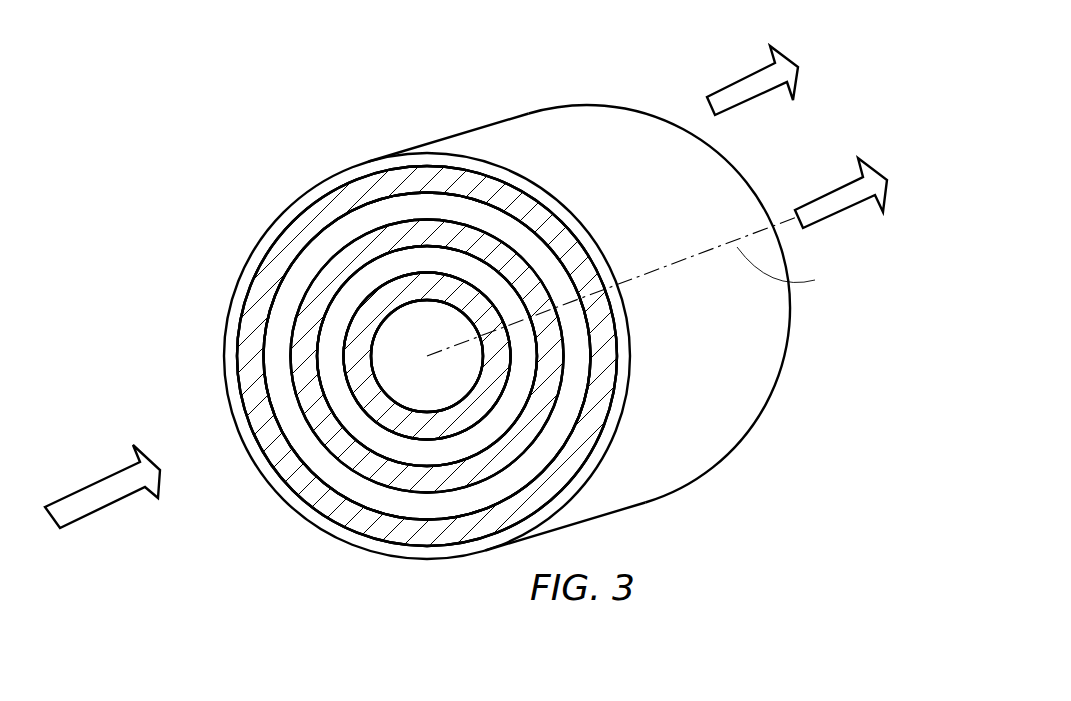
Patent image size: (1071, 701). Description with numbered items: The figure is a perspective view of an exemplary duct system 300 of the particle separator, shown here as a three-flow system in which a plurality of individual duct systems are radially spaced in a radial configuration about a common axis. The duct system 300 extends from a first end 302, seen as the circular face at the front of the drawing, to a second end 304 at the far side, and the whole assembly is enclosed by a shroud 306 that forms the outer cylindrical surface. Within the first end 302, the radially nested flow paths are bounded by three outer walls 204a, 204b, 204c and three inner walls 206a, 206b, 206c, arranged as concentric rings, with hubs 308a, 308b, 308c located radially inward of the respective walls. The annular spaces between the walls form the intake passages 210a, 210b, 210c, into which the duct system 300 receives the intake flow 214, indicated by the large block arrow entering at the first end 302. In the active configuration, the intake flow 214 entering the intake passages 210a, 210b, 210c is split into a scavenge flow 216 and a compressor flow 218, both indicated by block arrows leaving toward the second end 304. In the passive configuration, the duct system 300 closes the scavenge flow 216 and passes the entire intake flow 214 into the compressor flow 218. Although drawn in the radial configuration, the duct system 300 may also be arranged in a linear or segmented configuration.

The duct system 300 is at (397, 83).
The first end 302 is at (298, 568).
The second end 304 is at (770, 402).
The shroud 306 is at (522, 118).
The outer wall 204a is at (302, 210).
The outer wall 204b is at (320, 266).
The outer wall 204c is at (330, 318).
The inner wall 206a is at (328, 240).
The inner wall 206b is at (363, 303).
The inner wall 206c is at (387, 308).
The hub 308a is at (290, 316).
The hub 308b is at (330, 342).
The hub 308c is at (410, 370).
The intake passage 210a is at (270, 432).
The intake passage 210b is at (327, 432).
The intake passage 210c is at (395, 425).
The intake flow 214 is at (105, 478).
The scavenge flow 216 is at (742, 77).
The compressor flow 218 is at (830, 192).